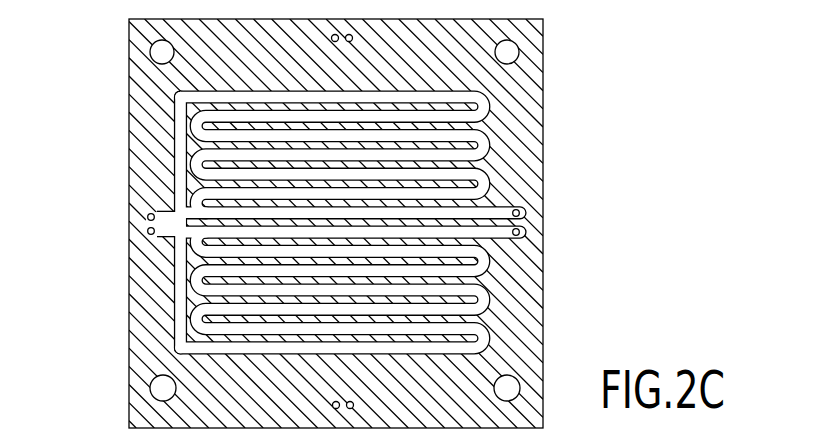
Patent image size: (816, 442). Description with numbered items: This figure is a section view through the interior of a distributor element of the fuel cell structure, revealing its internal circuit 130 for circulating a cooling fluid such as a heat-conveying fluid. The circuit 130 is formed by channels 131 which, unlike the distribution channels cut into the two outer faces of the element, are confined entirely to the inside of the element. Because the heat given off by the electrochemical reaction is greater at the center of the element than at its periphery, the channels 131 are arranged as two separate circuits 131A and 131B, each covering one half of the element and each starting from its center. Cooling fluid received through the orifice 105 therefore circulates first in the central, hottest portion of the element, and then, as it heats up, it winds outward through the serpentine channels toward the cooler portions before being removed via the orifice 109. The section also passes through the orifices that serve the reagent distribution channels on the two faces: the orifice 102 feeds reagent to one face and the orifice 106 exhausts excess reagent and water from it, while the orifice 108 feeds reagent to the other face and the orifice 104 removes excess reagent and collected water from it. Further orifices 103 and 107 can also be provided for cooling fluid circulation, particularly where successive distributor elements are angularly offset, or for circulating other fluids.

The orifice 102 is at (158, 52).
The orifice 103 is at (347, 42).
The orifice 104 is at (505, 53).
The orifice 105 is at (521, 232).
The orifice 106 is at (500, 378).
The orifice 107 is at (347, 402).
The orifice 108 is at (151, 386).
The orifice 109 is at (129, 233).
The circuit 130 is at (129, 141).
The channels 131 is at (176, 298).
The circuit 131A is at (478, 213).
The circuit 131B is at (492, 235).